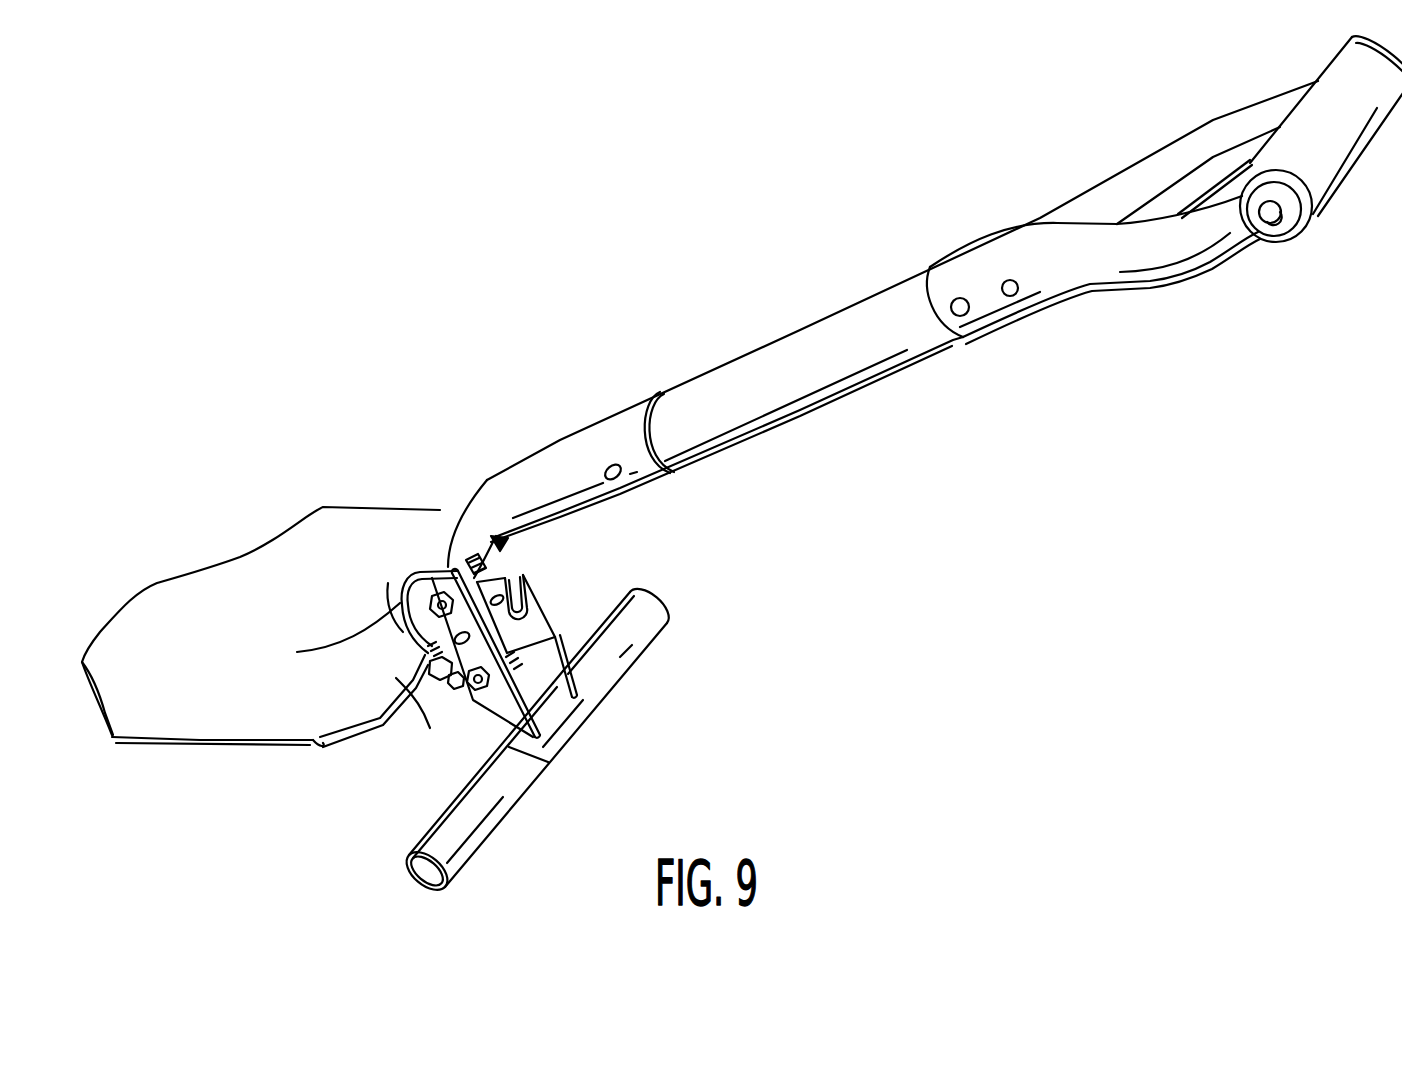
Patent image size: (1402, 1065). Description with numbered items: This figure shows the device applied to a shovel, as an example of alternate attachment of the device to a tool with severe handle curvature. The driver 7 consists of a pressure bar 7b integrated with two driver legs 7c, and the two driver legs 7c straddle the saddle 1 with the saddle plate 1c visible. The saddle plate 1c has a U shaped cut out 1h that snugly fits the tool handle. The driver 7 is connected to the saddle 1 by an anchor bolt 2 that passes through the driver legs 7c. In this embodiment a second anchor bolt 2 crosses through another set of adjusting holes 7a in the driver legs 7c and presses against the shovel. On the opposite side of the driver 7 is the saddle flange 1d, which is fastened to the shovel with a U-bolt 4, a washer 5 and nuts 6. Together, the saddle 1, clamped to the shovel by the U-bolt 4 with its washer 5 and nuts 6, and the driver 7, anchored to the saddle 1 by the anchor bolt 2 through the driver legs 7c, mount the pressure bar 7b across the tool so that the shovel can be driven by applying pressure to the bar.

The saddle 1 is at (547, 612).
The saddle plate 1c is at (525, 585).
The saddle flange 1d is at (428, 728).
The U shaped cut out 1h is at (520, 555).
The anchor bolt 2 is at (419, 578).
The U-bolt 4 is at (395, 592).
The washer 5 is at (425, 690).
The nuts 6 is at (453, 687).
The driver 7 is at (663, 628).
The adjusting holes 7a is at (454, 578).
The pressure bar 7b is at (557, 713).
The driver legs 7c is at (573, 643).